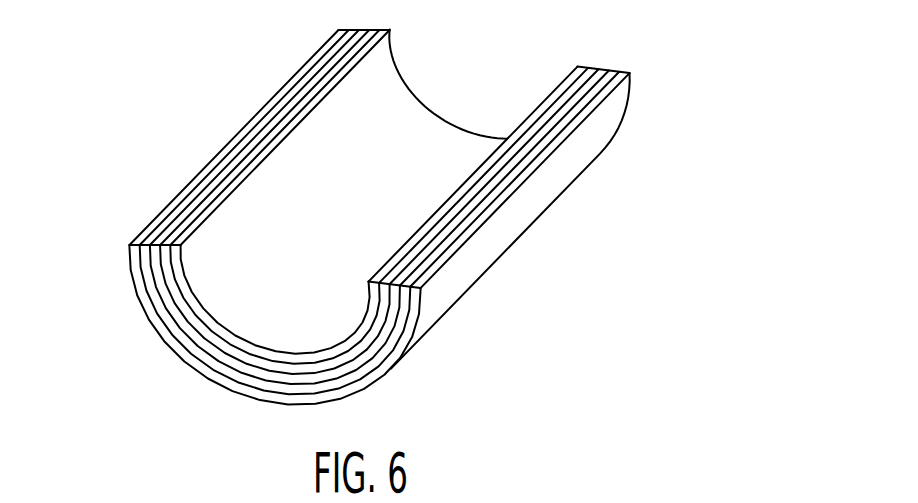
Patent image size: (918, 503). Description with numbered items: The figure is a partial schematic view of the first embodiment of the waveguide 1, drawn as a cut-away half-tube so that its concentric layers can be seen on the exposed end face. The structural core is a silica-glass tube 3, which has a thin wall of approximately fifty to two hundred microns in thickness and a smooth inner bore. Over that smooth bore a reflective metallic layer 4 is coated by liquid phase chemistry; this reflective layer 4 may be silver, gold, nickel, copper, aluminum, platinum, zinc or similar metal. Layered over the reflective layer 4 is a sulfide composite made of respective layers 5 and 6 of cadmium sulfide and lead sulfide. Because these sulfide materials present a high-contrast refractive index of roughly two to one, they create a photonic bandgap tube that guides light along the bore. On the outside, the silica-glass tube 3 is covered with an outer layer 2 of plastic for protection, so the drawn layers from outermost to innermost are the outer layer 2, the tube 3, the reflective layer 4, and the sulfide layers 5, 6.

The waveguide 1 is at (666, 121).
The outer layer of plastic 2 is at (375, 375).
The silica-glass tube 3 is at (254, 386).
The reflective metallic layer 4 is at (232, 368).
The cadmium sulfide layer 5 is at (207, 340).
The lead sulfide layer 6 is at (180, 285).